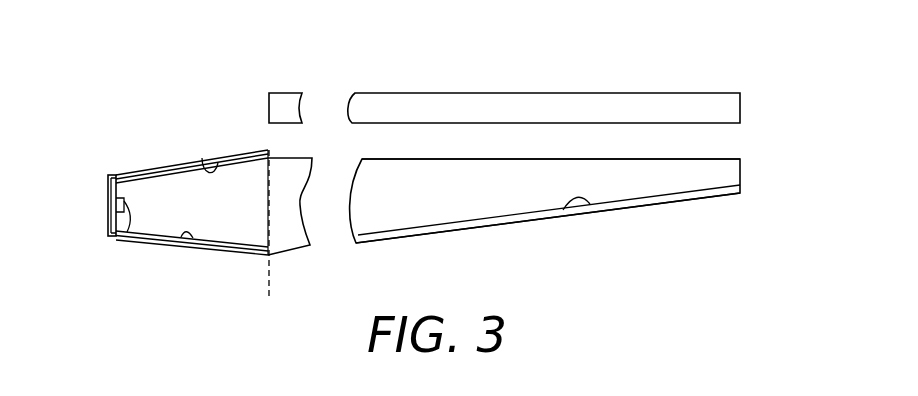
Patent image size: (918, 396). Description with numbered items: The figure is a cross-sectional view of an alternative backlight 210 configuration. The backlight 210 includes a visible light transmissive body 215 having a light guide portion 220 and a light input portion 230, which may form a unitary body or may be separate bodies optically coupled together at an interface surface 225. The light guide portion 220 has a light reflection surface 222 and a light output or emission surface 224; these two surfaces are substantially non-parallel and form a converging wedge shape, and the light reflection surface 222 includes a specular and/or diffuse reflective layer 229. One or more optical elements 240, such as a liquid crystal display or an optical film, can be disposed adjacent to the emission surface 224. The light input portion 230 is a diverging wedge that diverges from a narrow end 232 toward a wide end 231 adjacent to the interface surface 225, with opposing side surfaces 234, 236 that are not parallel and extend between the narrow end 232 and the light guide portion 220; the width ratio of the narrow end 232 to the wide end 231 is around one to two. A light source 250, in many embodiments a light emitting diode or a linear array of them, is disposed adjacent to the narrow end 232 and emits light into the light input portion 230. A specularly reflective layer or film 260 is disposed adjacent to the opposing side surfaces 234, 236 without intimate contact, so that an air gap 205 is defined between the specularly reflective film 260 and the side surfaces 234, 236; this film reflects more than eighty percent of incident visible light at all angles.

The air gap 205 is at (172, 175).
The backlight 210 is at (427, 67).
The visible light transmissive body 215 is at (275, 152).
The light guide portion 220 is at (723, 143).
The light reflection surface 222 is at (590, 204).
The emission surface 224 is at (598, 158).
The interface surface 225 is at (283, 239).
The reflective layer 229 is at (437, 234).
The light input portion 230 is at (165, 157).
The wide end 231 is at (268, 223).
The narrow end 232 is at (115, 172).
The side surface 234 is at (202, 158).
The side surface 236 is at (187, 240).
The optical element 240 is at (680, 103).
The light source 250 is at (124, 239).
The specularly reflective layer or film 260 is at (140, 170).